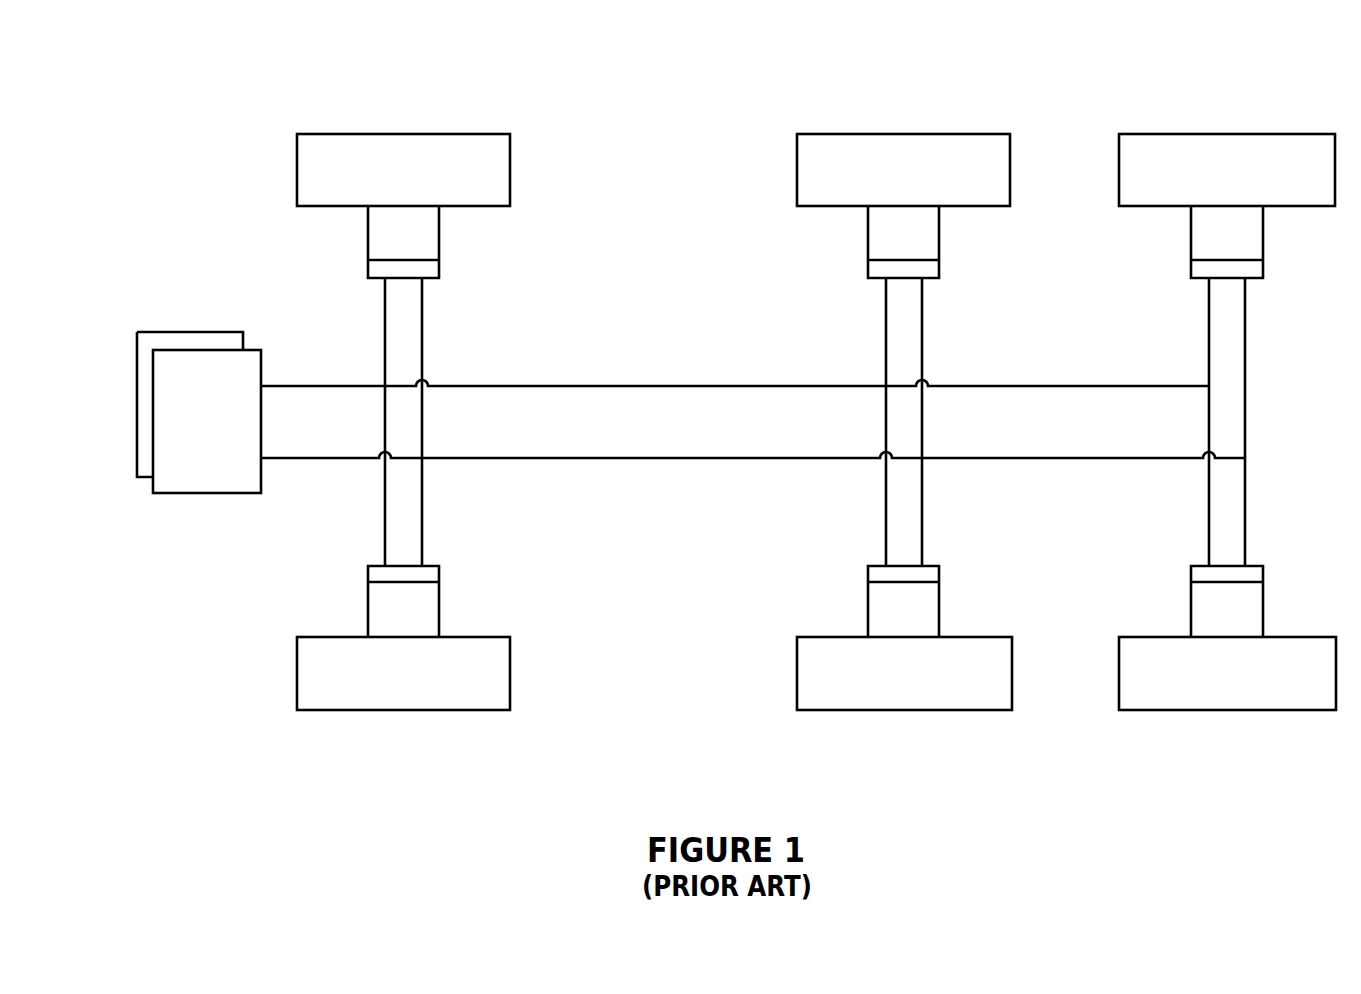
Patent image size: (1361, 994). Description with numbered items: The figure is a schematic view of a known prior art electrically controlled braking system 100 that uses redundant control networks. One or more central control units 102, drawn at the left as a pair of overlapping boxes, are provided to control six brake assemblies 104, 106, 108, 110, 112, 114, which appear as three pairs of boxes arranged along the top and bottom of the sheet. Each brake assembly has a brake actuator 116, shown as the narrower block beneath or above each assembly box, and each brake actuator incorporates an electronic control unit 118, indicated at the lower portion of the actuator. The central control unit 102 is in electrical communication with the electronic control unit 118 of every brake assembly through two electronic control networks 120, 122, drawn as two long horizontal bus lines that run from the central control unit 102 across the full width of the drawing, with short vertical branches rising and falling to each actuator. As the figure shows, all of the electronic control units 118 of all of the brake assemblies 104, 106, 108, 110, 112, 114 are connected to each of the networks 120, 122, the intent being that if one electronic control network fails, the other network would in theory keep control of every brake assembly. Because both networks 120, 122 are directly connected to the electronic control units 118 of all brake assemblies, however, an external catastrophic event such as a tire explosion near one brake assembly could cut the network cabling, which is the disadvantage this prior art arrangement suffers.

The redundant electronic control system 100 is at (450, 795).
The central control unit 102 is at (227, 362).
The brake assembly 104 is at (448, 143).
The brake assembly 106 is at (823, 143).
The brake assembly 108 is at (1153, 143).
The brake assembly 110 is at (465, 692).
The brake assembly 112 is at (850, 695).
The brake assembly 114 is at (1148, 695).
The brake actuator 116 is at (420, 232).
The electronic control unit 118 is at (887, 268).
The electronic control network 120 is at (735, 369).
The electronic control network 122 is at (753, 474).